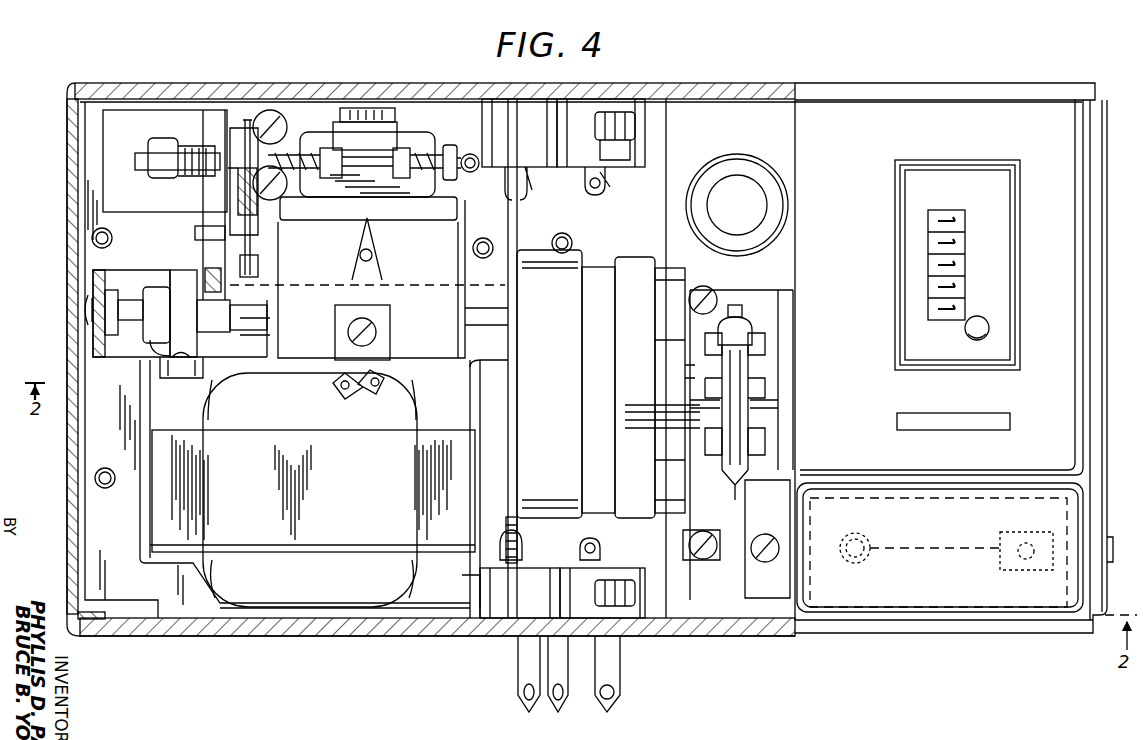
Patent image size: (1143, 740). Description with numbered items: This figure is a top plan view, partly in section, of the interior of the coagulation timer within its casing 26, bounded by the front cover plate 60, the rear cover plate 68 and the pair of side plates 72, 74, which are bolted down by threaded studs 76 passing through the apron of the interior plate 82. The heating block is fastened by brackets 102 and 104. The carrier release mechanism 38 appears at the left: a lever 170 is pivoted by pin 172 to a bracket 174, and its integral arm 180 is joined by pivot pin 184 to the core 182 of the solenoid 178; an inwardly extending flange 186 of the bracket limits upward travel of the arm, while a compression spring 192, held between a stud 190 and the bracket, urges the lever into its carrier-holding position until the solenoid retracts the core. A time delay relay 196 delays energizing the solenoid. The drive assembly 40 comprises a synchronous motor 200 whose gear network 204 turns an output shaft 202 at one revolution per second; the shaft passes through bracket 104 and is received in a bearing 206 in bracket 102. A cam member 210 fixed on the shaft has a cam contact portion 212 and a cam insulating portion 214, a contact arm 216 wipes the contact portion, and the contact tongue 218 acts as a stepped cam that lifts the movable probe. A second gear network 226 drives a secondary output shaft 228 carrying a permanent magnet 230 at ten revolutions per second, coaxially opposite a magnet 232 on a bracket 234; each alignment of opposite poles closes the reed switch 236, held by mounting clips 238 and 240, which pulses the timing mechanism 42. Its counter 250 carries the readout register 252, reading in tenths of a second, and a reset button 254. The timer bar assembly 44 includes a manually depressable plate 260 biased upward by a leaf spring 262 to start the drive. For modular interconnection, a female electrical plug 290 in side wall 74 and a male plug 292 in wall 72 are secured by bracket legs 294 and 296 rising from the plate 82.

The casing 26 is at (1108, 440).
The carrier release mechanism 38 is at (258, 152).
The drive assembly 40 is at (566, 525).
The timing mechanism 42 is at (752, 306).
The timer bar assembly 44 is at (866, 606).
The front cover plate 60 is at (1100, 487).
The rear cover plate 68 is at (78, 497).
The side plate 72 is at (308, 638).
The side plate 74 is at (733, 88).
The threaded studs 76 is at (652, 130).
The plate 82 is at (92, 458).
The bracket 102 is at (100, 275).
The bracket 104 is at (510, 302).
The lever 170 is at (205, 280).
The pin 172 is at (197, 300).
The bracket 174 is at (232, 222).
The solenoid 178 is at (158, 205).
The arm 180 is at (213, 140).
The core 182 is at (165, 152).
The pivot pin 184 is at (148, 168).
The flange 186 is at (200, 237).
The stud 190 is at (262, 263).
The compression spring 192 is at (243, 213).
The time delay relay 196 is at (422, 368).
The synchronous motor 200 is at (636, 258).
The output shaft 202 is at (480, 328).
The gear network 204 is at (582, 256).
The bearing 206 is at (120, 290).
The cam member 210 is at (135, 305).
The cam contact portion 212 is at (175, 285).
The cam insulating portion 214 is at (150, 350).
The contact arm 216 is at (172, 378).
The electrical contact tongue 218 is at (255, 335).
The second gear network 226 is at (690, 263).
The secondary output shaft 228 is at (640, 380).
The permanent magnet 230 is at (660, 428).
The magnet 232 is at (770, 394).
The bracket 234 is at (795, 325).
The reed switch 236 is at (742, 405).
The mounting clip 238 is at (776, 368).
The mounting clip 240 is at (770, 440).
The counter 250 is at (1055, 293).
The readout register 252 is at (942, 215).
The reset button 254 is at (980, 338).
The manually depressable plate 260 is at (1042, 598).
The leaf spring 262 is at (935, 612).
The female electrical plug 290 is at (500, 118).
The male plug 292 is at (498, 592).
The bracket leg 294 is at (612, 99).
The bracket leg 296 is at (630, 620).